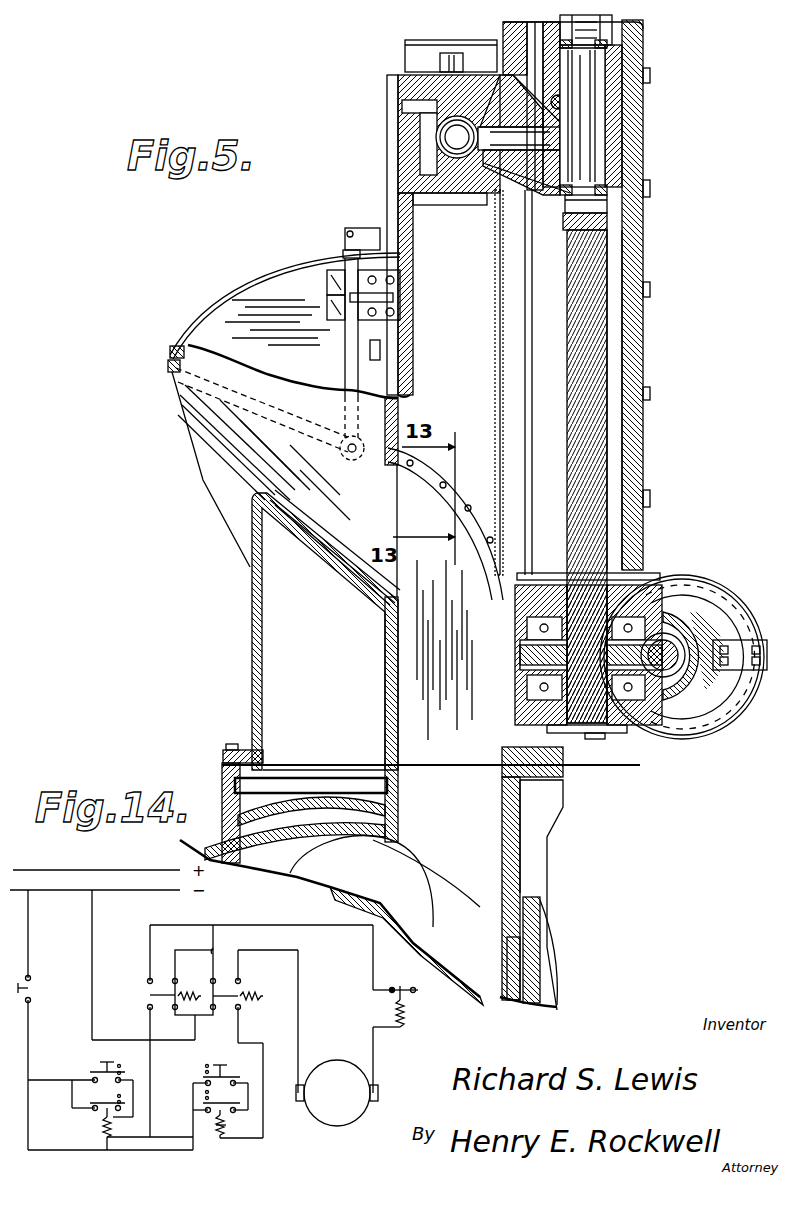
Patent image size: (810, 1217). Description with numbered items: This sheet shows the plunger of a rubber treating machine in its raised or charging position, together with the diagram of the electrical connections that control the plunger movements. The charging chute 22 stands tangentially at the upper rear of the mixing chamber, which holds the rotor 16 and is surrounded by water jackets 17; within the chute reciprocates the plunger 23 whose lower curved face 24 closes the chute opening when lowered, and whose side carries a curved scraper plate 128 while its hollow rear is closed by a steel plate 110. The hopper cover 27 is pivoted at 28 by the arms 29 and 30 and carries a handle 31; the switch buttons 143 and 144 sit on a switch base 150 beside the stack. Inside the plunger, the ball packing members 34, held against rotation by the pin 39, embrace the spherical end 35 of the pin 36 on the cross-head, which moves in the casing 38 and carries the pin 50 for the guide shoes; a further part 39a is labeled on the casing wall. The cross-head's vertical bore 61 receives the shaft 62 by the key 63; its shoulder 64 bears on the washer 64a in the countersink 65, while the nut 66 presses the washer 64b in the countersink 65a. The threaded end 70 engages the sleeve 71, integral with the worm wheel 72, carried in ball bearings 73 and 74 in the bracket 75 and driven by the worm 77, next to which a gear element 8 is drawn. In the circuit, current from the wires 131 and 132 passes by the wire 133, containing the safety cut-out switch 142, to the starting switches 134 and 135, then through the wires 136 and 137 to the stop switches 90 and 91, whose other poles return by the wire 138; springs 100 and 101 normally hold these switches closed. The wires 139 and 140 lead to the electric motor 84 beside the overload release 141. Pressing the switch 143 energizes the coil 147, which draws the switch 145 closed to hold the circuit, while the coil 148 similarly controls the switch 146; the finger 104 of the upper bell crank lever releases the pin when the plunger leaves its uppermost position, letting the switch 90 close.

In FIG. 5, the finger 104 is at (448, 69).
In FIG. 5, the ball packing members 34 is at (473, 100).
In FIG. 5, the pin 39 is at (432, 112).
In FIG. 5, the plunger 23 is at (407, 163).
In FIG. 5, the pin 50 is at (551, 104).
In FIG. 5, the spherical end 35 is at (459, 150).
In FIG. 5, the pin 36 is at (527, 152).
In FIG. 5, the casing 38 is at (633, 250).
In FIG. 5, the key 63 is at (597, 90).
In FIG. 5, the vertical bore 61 is at (618, 120).
In FIG. 5, the shaft 62 is at (583, 152).
In FIG. 5, the nut 66 is at (612, 32).
In FIG. 5, the washer 64b is at (610, 43).
In FIG. 5, the countersink 65a is at (612, 47).
In FIG. 5, the shoulder 64 is at (590, 192).
In FIG. 5, the countersink 65 is at (597, 200).
In FIG. 5, the washer 64a is at (567, 214).
In FIG. 5, the threaded portion 70 is at (607, 285).
In FIG. 5, the rib 39a is at (633, 354).
In FIG. 5, the steel plate 110 is at (497, 295).
In FIG. 5, the handle 31 is at (383, 250).
In FIG. 5, the switch base 150 is at (353, 254).
In FIG. 5, the starting switch 143 is at (327, 285).
In FIG. 14, the starting switch 143 is at (95, 1078).
In FIG. 5, the starting switch 144 is at (327, 307).
In FIG. 14, the starting switch 144 is at (230, 1082).
In FIG. 5, the arm 30 is at (353, 366).
In FIG. 5, the pivot 28 is at (362, 460).
In FIG. 5, the cover 27 is at (287, 271).
In FIG. 5, the arm 29 is at (253, 405).
In FIG. 5, the lower curved face 24 is at (425, 483).
In FIG. 5, the curved scraper plate 128 is at (475, 515).
In FIG. 5, the bracket 75 is at (520, 715).
In FIG. 5, the worm wheel 72 is at (630, 690).
In FIG. 5, the gear 8 is at (697, 597).
In FIG. 5, the worm 77 is at (682, 677).
In FIG. 5, the ball bearing 73 is at (667, 582).
In FIG. 5, the sleeve 71 is at (610, 733).
In FIG. 5, the ball bearing 74 is at (632, 740).
In FIG. 5, the charging chute 22 is at (502, 828).
In FIG. 5, the water jacket 17 is at (313, 810).
In FIG. 5, the rotor 16 is at (430, 915).
In FIG. 14, the wire 131 is at (123, 861).
In FIG. 14, the wire 132 is at (68, 890).
In FIG. 14, the wire 133 is at (50, 1029).
In FIG. 14, the safety cut-out switch 142 is at (33, 993).
In FIG. 14, the wire 138 is at (92, 937).
In FIG. 14, the wire 136 is at (150, 1078).
In FIG. 14, the cut-out switch 90 is at (158, 972).
In FIG. 14, the spring 100 is at (198, 983).
In FIG. 14, the cut-out switch 91 is at (222, 985).
In FIG. 14, the spring 101 is at (243, 993).
In FIG. 14, the wire 137 is at (263, 1043).
In FIG. 14, the wire 139 is at (300, 1012).
In FIG. 14, the wire 140 is at (372, 978).
In FIG. 14, the overload release 141 is at (406, 1020).
In FIG. 14, the electric motor 84 is at (345, 1120).
In FIG. 14, the starting switch 134 is at (82, 1121).
In FIG. 14, the coil control switch 145 is at (103, 1119).
In FIG. 14, the coil 147 is at (112, 1125).
In FIG. 14, the starting switch 135 is at (187, 1106).
In FIG. 14, the coil control switch 146 is at (212, 1120).
In FIG. 14, the coil 148 is at (226, 1122).